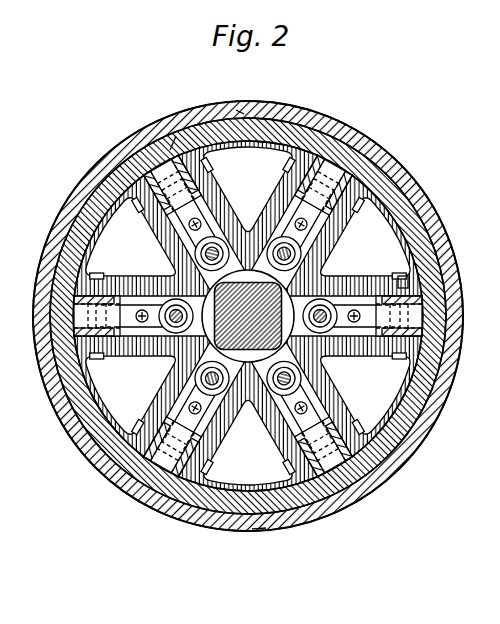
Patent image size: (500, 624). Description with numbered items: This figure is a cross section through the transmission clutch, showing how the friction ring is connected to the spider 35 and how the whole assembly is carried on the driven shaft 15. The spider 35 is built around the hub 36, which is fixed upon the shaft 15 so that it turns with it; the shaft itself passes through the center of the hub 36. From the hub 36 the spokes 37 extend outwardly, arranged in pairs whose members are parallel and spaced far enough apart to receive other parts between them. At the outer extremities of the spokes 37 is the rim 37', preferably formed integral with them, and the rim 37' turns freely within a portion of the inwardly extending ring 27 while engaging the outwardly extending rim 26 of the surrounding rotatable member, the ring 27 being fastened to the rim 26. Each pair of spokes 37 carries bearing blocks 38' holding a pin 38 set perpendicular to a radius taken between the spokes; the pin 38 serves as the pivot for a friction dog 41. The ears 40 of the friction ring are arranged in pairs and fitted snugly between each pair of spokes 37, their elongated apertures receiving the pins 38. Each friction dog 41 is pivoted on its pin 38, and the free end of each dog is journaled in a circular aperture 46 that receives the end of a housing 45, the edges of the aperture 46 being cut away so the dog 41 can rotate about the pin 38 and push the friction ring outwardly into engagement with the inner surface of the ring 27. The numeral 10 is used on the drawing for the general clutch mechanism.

The rotary machine casing 10 is at (44, 292).
The driven shaft 15 is at (250, 337).
The outwardly extending rim 26 is at (357, 132).
The inwardly extending ring 27 is at (397, 465).
The spider 35 is at (162, 277).
The hub 36 is at (252, 358).
The spokes 37 is at (342, 293).
The rim 37' is at (265, 545).
The pin 38 is at (248, 315).
The bearing blocks 38' is at (359, 183).
The ears 40 is at (173, 148).
The friction dog 41 is at (268, 447).
The housing 45 is at (300, 397).
The circular aperture 46 is at (198, 372).